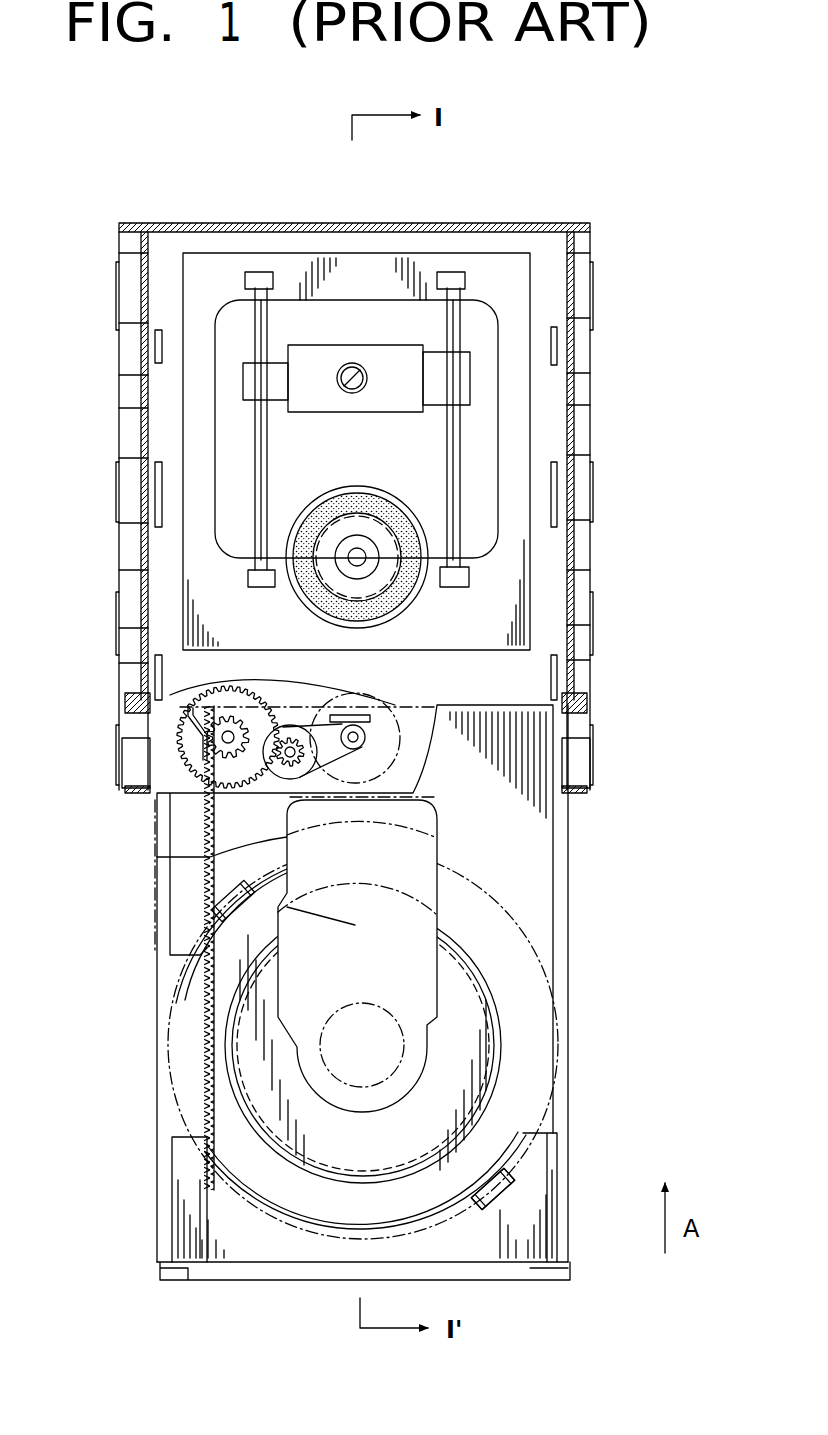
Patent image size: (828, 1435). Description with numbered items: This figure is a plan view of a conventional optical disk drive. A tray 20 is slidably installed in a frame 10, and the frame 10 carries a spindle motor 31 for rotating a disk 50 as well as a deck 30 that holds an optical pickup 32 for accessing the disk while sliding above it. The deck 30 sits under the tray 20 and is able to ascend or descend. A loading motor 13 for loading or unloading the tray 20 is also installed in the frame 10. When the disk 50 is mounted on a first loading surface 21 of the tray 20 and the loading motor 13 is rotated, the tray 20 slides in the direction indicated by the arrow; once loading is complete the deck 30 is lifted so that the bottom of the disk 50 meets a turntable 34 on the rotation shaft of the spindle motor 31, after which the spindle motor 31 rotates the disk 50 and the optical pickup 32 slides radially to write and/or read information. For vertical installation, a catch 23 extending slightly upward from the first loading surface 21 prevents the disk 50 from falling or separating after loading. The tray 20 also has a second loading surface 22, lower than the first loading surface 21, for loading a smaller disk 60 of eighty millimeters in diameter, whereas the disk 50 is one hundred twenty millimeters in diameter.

The frame 10 is at (578, 225).
The deck 30 is at (530, 308).
The optical pickup 32 is at (357, 352).
The turntable 34 is at (413, 600).
The spindle motor 31 is at (317, 590).
The loading motor 13 is at (150, 690).
The tray 20 is at (580, 932).
The disk 50 is at (355, 848).
The disk 60 is at (355, 925).
The first loading surface 21 is at (523, 1053).
The second loading surface 22 is at (440, 1087).
The catch 23 is at (480, 1195).